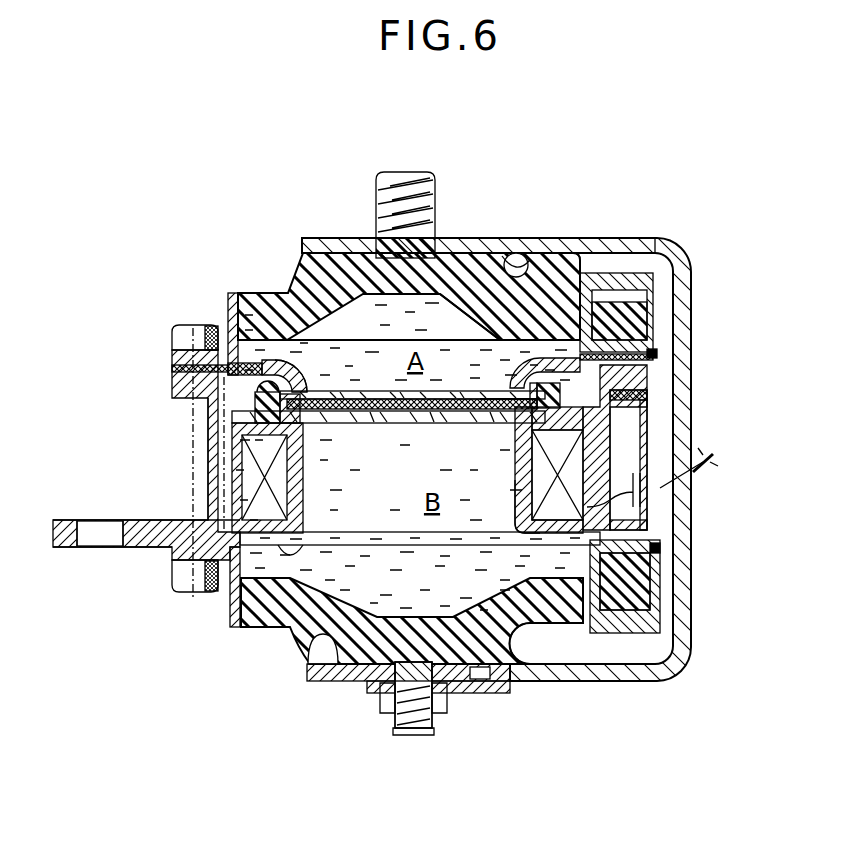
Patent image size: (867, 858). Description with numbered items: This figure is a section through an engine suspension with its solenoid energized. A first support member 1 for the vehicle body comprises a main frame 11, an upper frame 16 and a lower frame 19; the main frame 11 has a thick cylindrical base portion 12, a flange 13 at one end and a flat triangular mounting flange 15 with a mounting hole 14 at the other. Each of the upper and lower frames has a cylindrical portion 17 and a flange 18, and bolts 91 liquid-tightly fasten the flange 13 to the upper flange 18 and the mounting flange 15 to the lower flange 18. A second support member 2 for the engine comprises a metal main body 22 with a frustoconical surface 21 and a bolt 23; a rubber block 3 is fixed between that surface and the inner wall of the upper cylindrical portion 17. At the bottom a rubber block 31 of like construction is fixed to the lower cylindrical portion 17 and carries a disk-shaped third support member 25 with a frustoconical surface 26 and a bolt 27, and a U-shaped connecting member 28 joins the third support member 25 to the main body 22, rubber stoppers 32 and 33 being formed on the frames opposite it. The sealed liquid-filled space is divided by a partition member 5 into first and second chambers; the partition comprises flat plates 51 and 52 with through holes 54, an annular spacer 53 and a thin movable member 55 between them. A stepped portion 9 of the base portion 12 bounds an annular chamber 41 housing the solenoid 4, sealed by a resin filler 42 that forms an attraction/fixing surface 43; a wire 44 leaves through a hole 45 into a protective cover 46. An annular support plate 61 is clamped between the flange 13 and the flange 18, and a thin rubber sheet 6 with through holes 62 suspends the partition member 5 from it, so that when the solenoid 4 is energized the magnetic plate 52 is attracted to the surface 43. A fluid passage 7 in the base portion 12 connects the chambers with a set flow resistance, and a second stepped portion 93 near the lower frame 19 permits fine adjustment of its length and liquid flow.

The first support member 1 is at (146, 472).
The second support member 2 is at (345, 236).
The rubber block 3 is at (297, 276).
The solenoid 4 is at (253, 466).
The partition member 5 is at (388, 413).
The rubber sheet 6 is at (308, 372).
The fluid passage 7 is at (230, 488).
The stepped portion 9 is at (300, 425).
The main frame 11 is at (207, 436).
The cylindrical base portion 12 is at (612, 442).
The flange 13 is at (628, 380).
The mounting hole 14 is at (103, 536).
The mounting flange 15 is at (160, 522).
The upper frame 16 is at (228, 304).
The cylindrical portion 17 is at (590, 300).
The flange 18 is at (655, 356).
The lower frame 19 is at (234, 630).
The frustoconical surface 21 is at (518, 253).
The support member main body 22 is at (458, 262).
The bolt 23 is at (405, 172).
The third support member 25 is at (363, 670).
The frustoconical surface 26 is at (322, 642).
The bolt 27 is at (415, 736).
The connecting member 28 is at (690, 260).
The rubber block 31 is at (540, 604).
The rubber stopper 32 is at (630, 320).
The rubber stopper 33 is at (628, 590).
The annular chamber 41 is at (526, 500).
The filler 42 is at (557, 475).
The attraction/fixing surface 43 is at (520, 432).
The wire 44 is at (706, 470).
The hole 45 is at (576, 545).
The protective cover 46 is at (645, 395).
The flat plate 51 is at (372, 392).
The flat plate 52 is at (440, 409).
The spacer 53 is at (561, 391).
The through holes 54 is at (452, 391).
The movable member 55 is at (488, 423).
The support plate 61 is at (175, 366).
The through holes 62 is at (270, 362).
The bolts 91 is at (185, 335).
The second stepped portion 93 is at (295, 545).